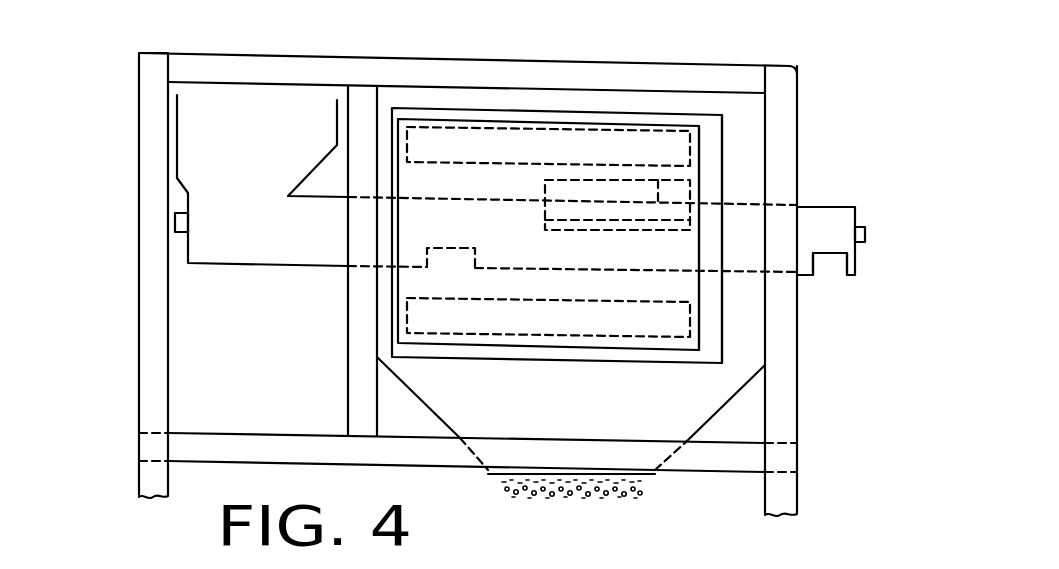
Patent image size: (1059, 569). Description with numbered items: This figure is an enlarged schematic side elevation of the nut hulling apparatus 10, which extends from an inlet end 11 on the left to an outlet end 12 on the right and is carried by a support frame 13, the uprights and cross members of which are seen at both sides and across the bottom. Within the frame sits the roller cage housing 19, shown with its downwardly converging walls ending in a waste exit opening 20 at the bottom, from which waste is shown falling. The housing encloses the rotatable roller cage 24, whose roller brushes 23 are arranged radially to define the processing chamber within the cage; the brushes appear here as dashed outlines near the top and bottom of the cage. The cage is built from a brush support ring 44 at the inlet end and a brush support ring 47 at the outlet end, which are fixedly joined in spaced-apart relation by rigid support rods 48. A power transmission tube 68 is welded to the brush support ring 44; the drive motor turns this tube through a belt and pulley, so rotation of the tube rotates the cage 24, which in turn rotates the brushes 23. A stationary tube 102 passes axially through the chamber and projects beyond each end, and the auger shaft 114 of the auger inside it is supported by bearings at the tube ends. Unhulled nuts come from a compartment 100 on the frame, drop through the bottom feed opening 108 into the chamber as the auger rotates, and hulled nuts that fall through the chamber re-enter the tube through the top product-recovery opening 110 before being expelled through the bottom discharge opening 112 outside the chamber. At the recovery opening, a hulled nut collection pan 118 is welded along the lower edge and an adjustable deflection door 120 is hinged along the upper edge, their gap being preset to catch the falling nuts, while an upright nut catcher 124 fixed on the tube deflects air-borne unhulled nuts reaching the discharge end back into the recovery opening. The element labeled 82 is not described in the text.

The apparatus 10 is at (441, 58).
The inlet end 11 is at (134, 190).
The outlet end 12 is at (858, 181).
The support frame 13 is at (797, 390).
The roller cage housing 19 is at (710, 428).
The waste exit opening 20 is at (580, 492).
The roller brushes 23 is at (614, 128).
The roller cage 24 is at (552, 110).
The brush support ring 44 is at (392, 130).
The brush support ring 47 is at (723, 137).
The support rods 48 is at (672, 112).
The power transmission tube 68 is at (305, 148).
The support arm 82 is at (262, 190).
The compartment 100 is at (176, 106).
The tube 102 is at (302, 267).
The feed opening 108 is at (456, 260).
The product-recovery opening 110 is at (540, 214).
The discharge opening 112 is at (827, 270).
The auger shaft 114 is at (182, 236).
The hulled nut collection pan 118 is at (617, 230).
The deflection door 120 is at (543, 190).
The nut catcher 124 is at (687, 193).